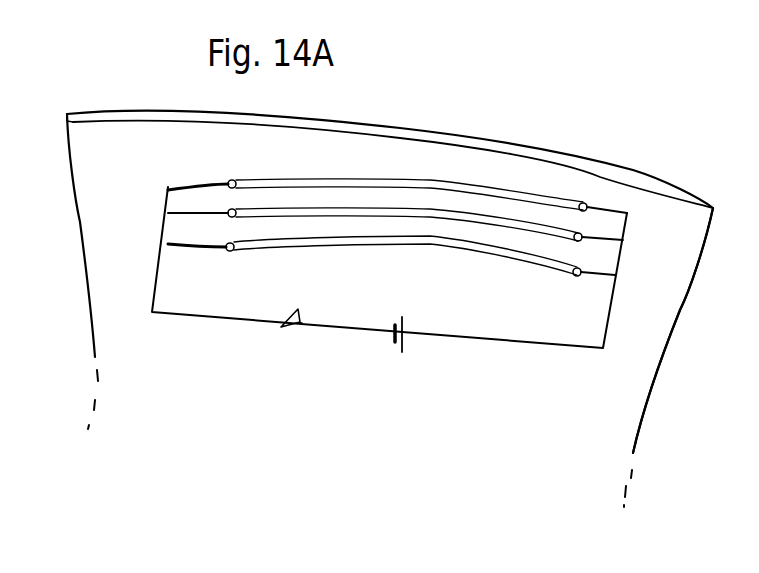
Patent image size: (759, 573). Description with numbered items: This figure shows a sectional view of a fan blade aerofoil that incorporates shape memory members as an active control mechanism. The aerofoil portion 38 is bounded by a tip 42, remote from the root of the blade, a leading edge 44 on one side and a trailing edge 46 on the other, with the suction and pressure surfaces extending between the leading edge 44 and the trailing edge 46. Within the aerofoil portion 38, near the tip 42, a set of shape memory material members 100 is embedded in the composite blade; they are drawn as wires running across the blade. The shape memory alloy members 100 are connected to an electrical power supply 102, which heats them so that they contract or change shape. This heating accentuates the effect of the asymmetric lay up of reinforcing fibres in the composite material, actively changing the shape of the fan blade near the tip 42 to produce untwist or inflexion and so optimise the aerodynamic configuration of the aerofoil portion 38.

The aerofoil portion 38 is at (652, 327).
The tip 42 is at (540, 152).
The leading edge 44 is at (98, 318).
The trailing edge 46 is at (687, 295).
The shape memory material member 100 is at (427, 243).
The electrical power supply 102 is at (394, 355).